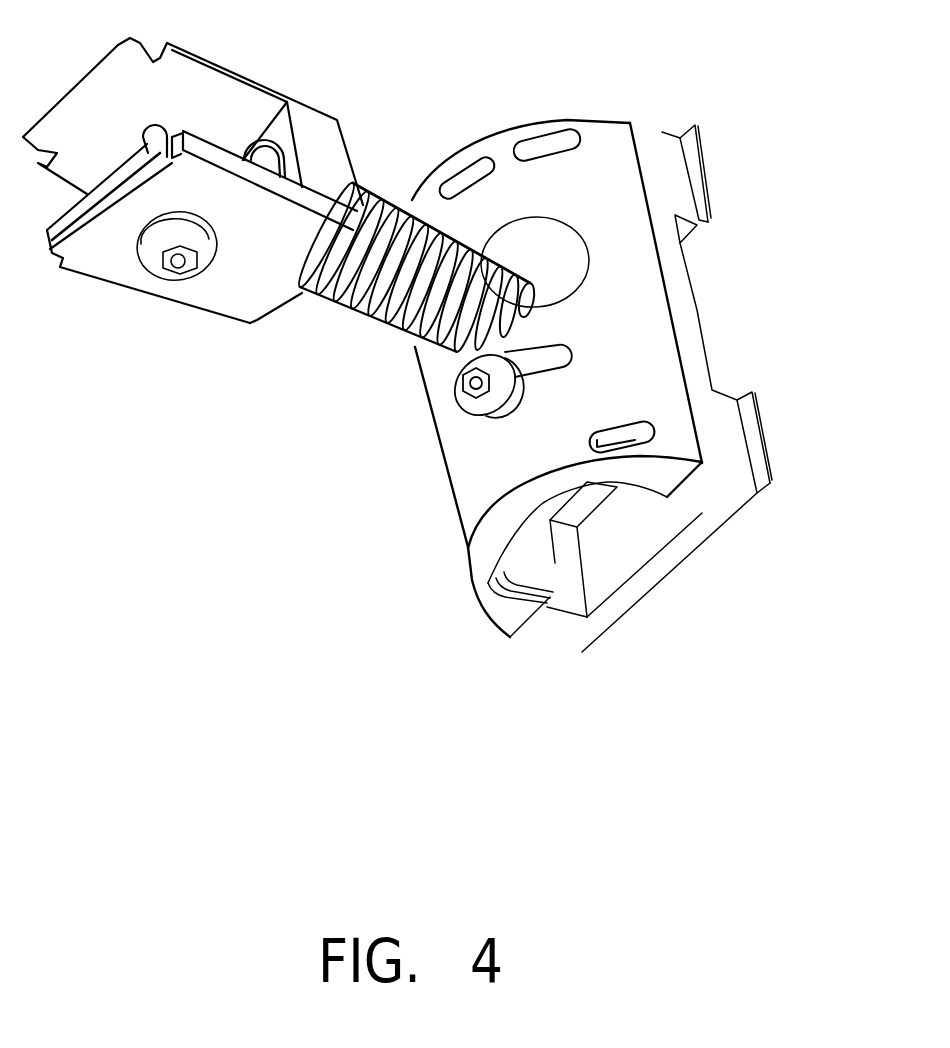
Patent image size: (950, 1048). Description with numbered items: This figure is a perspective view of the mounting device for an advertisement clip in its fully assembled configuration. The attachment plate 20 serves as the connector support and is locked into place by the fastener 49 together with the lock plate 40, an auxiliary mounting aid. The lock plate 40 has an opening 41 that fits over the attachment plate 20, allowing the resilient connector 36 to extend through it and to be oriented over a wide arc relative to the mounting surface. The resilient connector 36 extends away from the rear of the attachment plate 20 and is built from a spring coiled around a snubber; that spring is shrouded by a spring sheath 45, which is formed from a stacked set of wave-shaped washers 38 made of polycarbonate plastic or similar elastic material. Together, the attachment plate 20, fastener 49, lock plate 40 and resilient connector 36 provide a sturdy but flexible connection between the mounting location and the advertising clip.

The attachment plate 20 is at (500, 126).
The resilient connector 36 is at (407, 188).
The wave-shaped washers 38 is at (327, 310).
The lock plate 40 is at (643, 347).
The opening 41 is at (557, 132).
The spring sheath 45 is at (377, 333).
The fastener 49 is at (466, 410).